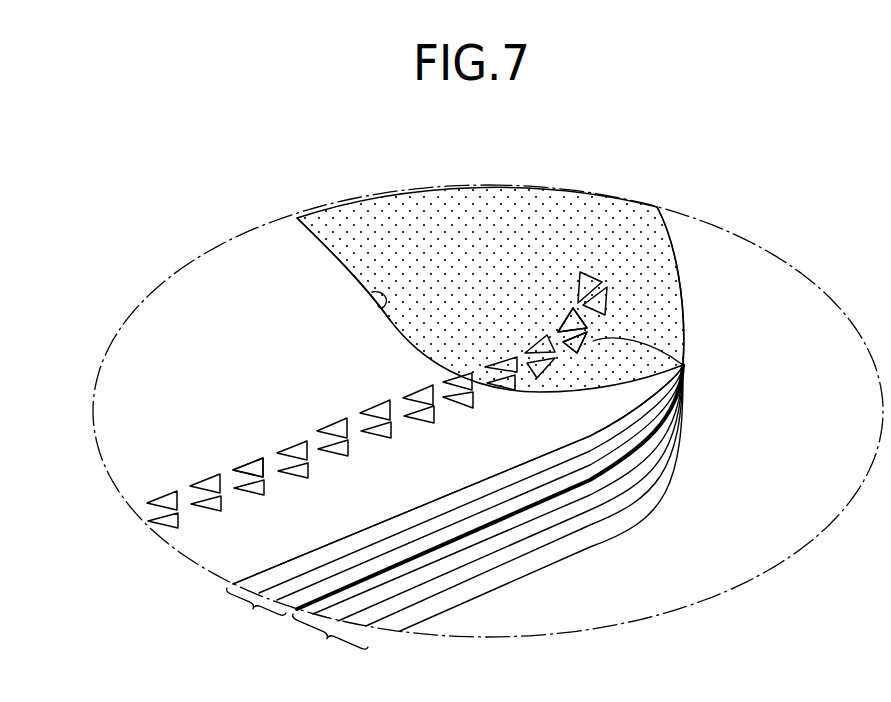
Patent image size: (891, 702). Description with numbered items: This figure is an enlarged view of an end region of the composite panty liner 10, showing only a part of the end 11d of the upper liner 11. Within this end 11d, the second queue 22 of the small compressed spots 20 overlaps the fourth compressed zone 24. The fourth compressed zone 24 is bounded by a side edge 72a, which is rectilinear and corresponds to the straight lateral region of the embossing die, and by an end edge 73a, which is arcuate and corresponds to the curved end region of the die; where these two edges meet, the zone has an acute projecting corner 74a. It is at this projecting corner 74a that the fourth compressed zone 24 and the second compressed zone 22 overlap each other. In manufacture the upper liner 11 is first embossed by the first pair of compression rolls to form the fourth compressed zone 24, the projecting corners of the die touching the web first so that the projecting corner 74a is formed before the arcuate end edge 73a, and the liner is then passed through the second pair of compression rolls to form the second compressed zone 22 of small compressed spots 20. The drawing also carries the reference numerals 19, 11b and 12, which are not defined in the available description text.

The composite panty liner 10 is at (808, 137).
The fourth compressed zone 24 is at (550, 217).
The end of the upper liner 11d is at (310, 247).
The end edge 73a is at (372, 292).
The projecting corner 74a is at (683, 365).
The small compressed spots 20 is at (337, 433).
The second queue of the small compressed spots 22 is at (243, 457).
The track portion 19 is at (577, 327).
The track lines 11b is at (500, 448).
The side edge 72a is at (606, 388).
The upper liner 11 is at (256, 614).
The second region 12 is at (330, 643).